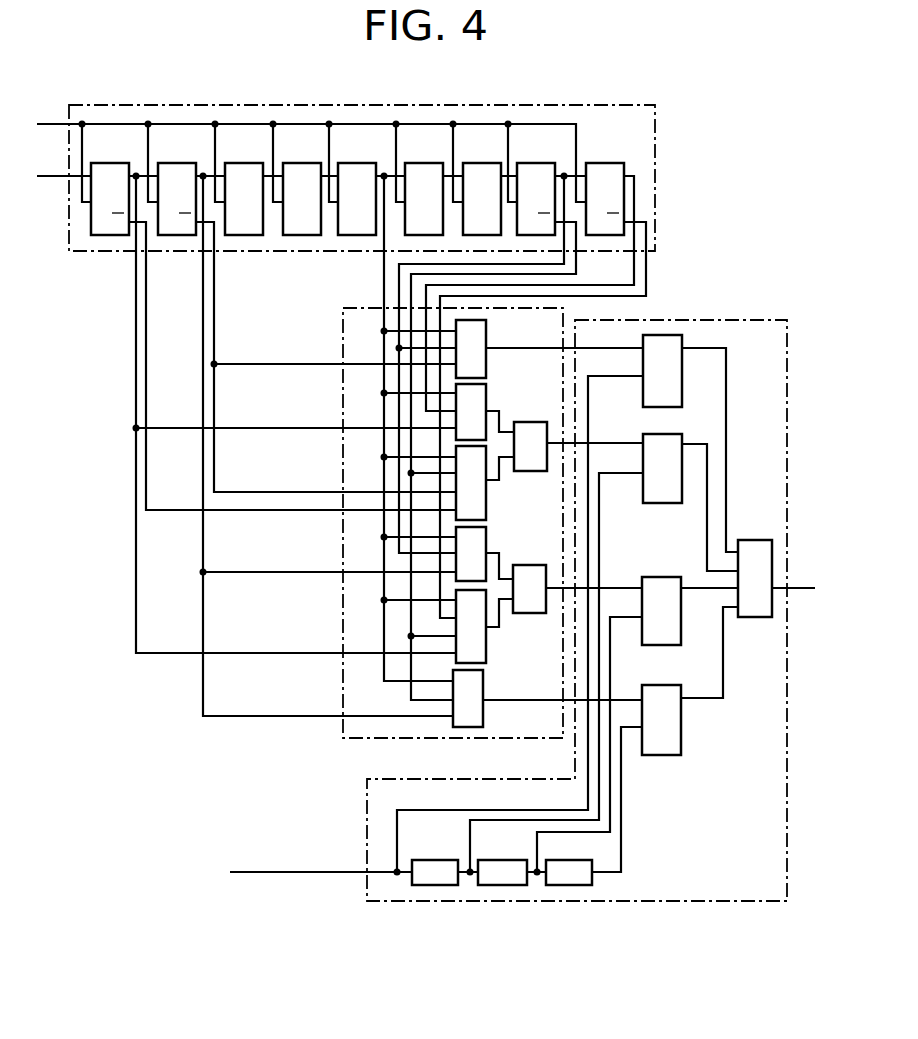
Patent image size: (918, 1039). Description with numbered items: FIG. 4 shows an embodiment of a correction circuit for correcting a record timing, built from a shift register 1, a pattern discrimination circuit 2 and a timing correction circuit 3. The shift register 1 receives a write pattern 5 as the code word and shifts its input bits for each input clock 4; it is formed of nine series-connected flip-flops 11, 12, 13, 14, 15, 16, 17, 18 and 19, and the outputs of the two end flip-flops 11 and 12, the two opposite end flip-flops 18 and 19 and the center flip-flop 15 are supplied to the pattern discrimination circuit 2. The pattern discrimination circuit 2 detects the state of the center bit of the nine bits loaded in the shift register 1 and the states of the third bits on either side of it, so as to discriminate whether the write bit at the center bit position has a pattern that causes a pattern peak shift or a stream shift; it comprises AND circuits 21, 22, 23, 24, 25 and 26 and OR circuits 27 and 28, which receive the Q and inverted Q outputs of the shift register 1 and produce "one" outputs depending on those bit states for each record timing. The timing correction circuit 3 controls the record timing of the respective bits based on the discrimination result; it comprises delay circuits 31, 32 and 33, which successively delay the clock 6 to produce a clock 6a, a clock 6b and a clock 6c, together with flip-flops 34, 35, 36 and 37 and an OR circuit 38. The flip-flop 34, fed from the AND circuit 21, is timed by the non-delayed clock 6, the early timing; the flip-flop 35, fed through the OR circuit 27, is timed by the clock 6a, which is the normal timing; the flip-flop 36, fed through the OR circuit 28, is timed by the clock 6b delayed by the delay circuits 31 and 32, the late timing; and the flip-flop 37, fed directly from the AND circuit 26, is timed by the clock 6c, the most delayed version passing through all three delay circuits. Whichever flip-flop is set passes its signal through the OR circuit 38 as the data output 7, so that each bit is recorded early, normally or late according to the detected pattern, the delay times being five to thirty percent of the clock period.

The shift register 1 is at (579, 105).
The pattern discrimination circuit 2 is at (343, 328).
The timing correction circuit 3 is at (726, 320).
The input clock 4 is at (53, 122).
The write pattern 5 is at (52, 178).
The clock 6 is at (290, 870).
The clock 6a is at (599, 530).
The clock 6b is at (610, 644).
The clock 6c is at (621, 800).
The data output 7 is at (800, 576).
The flip-flop 11 is at (609, 163).
The flip-flop 12 is at (543, 163).
The flip-flop 13 is at (487, 163).
The flip-flop 14 is at (432, 163).
The center flip-flop 15 is at (360, 163).
The flip-flop 16 is at (308, 163).
The flip-flop 17 is at (250, 163).
The flip-flop 18 is at (184, 163).
The flip-flop 19 is at (121, 163).
The AND circuit 21 is at (486, 330).
The AND circuit 22 is at (488, 397).
The AND circuit 23 is at (489, 502).
The AND circuit 24 is at (489, 540).
The AND circuit 25 is at (487, 646).
The AND circuit 26 is at (484, 684).
The OR circuit 27 is at (526, 422).
The OR circuit 28 is at (532, 555).
The delay circuit 31 is at (441, 860).
The delay circuit 32 is at (514, 860).
The delay circuit 33 is at (592, 865).
The flip-flop 34 is at (682, 362).
The flip-flop 35 is at (676, 434).
The flip-flop 36 is at (670, 577).
The flip-flop 37 is at (670, 685).
The OR circuit 38 is at (752, 540).